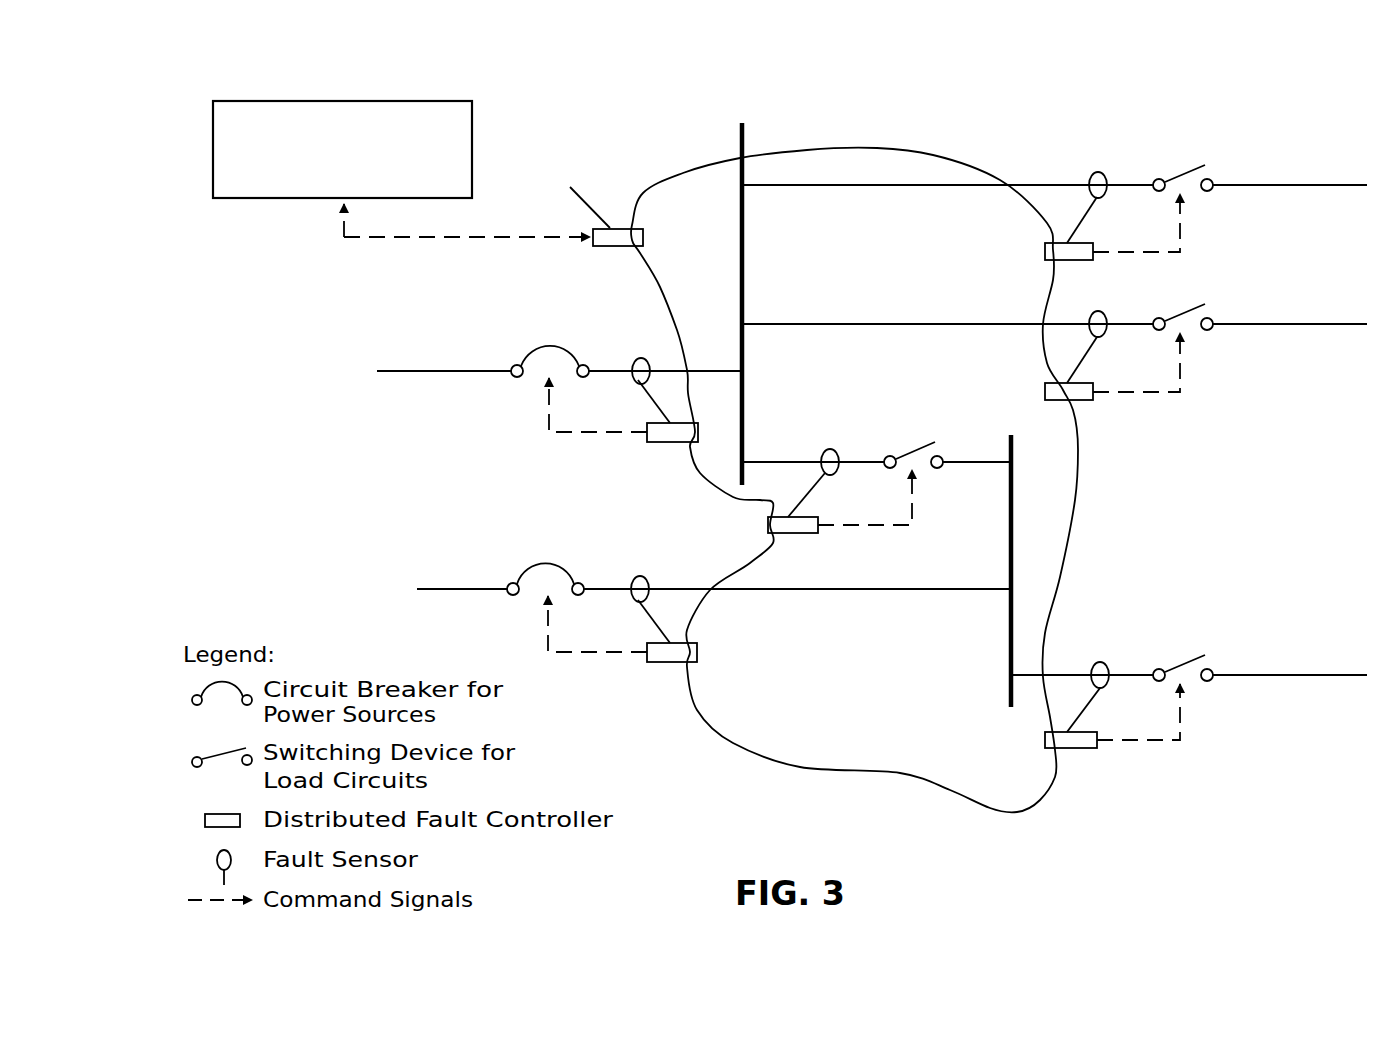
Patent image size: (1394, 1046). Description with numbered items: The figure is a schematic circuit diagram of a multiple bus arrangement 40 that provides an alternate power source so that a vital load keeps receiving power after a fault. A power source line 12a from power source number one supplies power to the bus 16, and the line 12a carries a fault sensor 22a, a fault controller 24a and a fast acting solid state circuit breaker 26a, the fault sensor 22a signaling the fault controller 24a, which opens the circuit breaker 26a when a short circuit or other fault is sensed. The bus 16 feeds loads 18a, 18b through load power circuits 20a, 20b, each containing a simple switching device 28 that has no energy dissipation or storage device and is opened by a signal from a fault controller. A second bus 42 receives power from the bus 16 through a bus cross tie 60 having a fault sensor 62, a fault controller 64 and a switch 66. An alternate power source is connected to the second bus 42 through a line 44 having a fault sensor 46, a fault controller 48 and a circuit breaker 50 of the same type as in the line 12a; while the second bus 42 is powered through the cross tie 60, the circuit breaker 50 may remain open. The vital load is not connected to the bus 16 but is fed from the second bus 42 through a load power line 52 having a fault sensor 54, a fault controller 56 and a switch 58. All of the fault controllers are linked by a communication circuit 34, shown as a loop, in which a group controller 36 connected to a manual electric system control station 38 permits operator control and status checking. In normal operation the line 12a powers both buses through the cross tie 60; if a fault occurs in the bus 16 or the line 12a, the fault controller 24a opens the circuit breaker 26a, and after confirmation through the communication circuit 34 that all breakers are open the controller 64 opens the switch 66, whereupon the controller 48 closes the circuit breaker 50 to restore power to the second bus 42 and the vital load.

The power source line 12a is at (430, 368).
The bus 16 is at (743, 265).
The load 18a is at (1287, 187).
The load 18b is at (1287, 326).
The load power circuit 20a is at (893, 187).
The load power circuit 20b is at (883, 325).
The fault sensor 22a is at (640, 357).
The fault controller 24a is at (668, 443).
The circuit breaker 26a is at (557, 341).
The switching device 28 is at (1187, 168).
The communication circuit 34 is at (686, 176).
The group controller 36 is at (645, 238).
The electric system control station 38 is at (268, 200).
The multiple bus arrangement 40 is at (1045, 143).
The second bus 42 is at (1008, 518).
The line 44 is at (457, 588).
The fault sensor 46 is at (640, 575).
The fault controller 48 is at (665, 665).
The circuit breaker 50 is at (553, 559).
The load power line 52 is at (1290, 678).
The fault sensor 54 is at (1100, 658).
The fault controller 56 is at (1083, 750).
The switch 58 is at (1188, 658).
The bus cross tie 60 is at (760, 462).
The fault sensor 62 is at (838, 472).
The fault controller 64 is at (803, 535).
The switch 66 is at (918, 448).